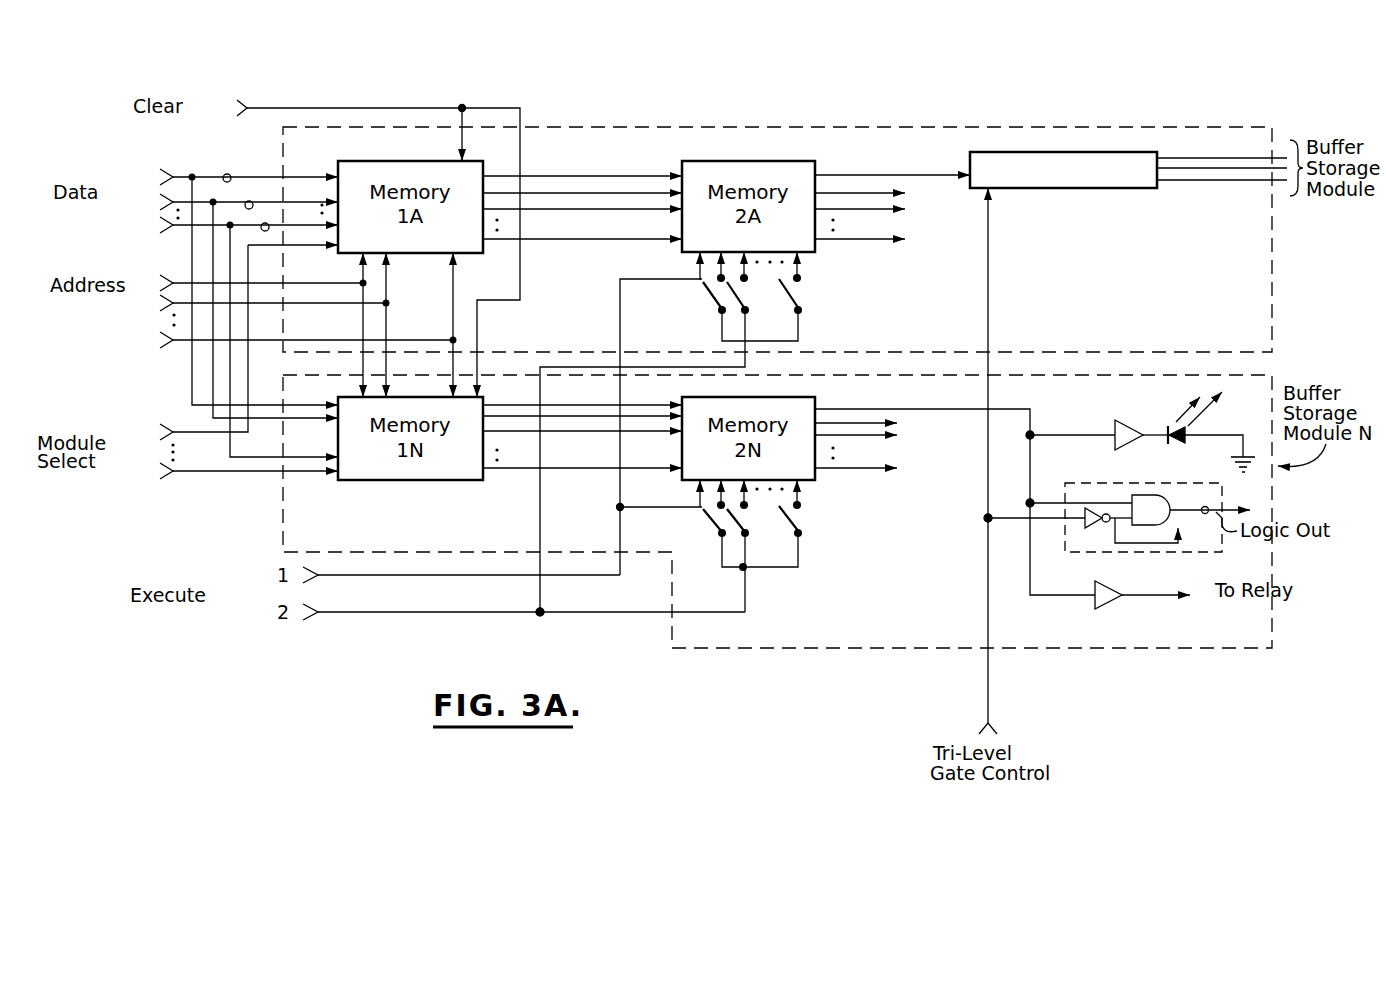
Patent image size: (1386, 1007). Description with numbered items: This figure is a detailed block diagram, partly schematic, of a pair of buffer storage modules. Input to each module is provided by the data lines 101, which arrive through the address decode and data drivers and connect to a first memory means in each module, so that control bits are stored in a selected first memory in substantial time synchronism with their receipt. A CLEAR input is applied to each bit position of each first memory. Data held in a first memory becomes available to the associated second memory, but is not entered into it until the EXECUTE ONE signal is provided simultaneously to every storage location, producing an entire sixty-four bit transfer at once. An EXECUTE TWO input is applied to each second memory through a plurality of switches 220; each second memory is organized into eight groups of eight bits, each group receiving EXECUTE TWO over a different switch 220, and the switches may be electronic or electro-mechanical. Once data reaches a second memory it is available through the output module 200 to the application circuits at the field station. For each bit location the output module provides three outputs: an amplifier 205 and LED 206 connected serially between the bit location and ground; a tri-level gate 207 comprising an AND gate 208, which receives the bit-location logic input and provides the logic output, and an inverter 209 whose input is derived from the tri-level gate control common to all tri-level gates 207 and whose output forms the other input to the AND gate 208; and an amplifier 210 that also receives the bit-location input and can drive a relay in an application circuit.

The data lines 101 is at (266, 223).
The output module 200 is at (1131, 152).
The amplifier 205 is at (1130, 420).
The LED 206 is at (1181, 446).
The tri-level gate 207 is at (1108, 483).
The AND gate 208 is at (1171, 506).
The inverter 209 is at (1091, 530).
The amplifier 210 is at (1111, 603).
The switch 220 is at (797, 297).